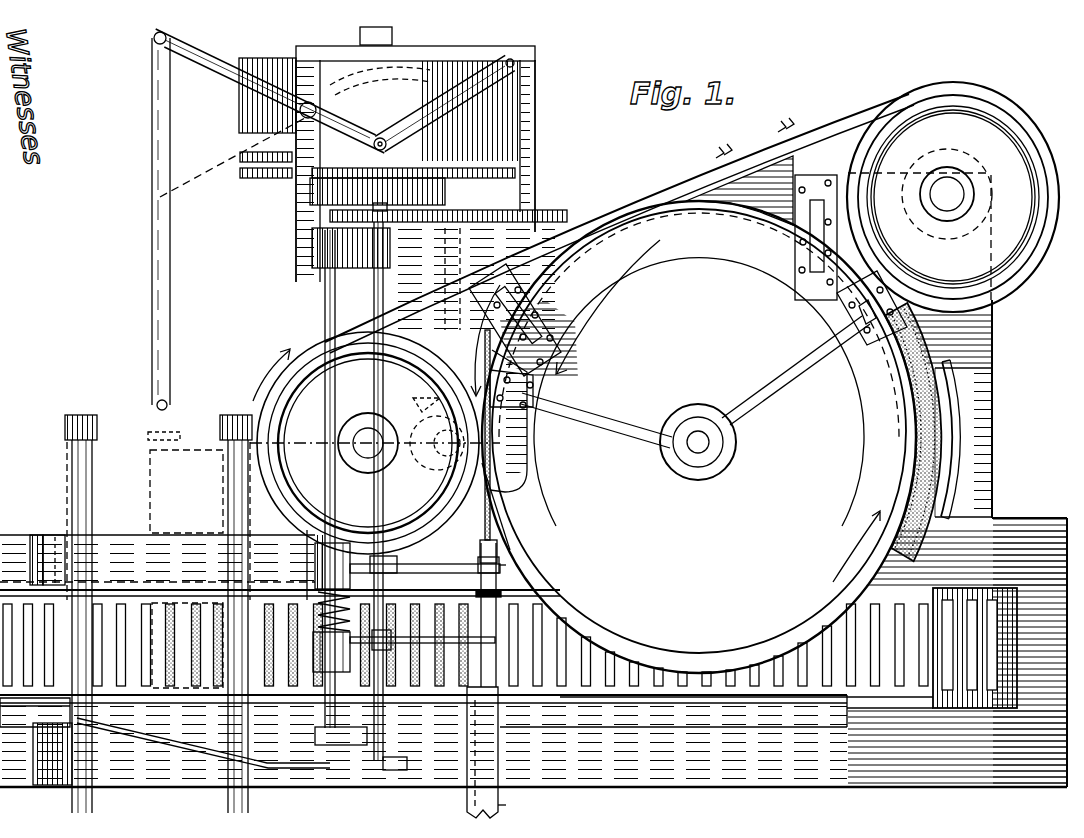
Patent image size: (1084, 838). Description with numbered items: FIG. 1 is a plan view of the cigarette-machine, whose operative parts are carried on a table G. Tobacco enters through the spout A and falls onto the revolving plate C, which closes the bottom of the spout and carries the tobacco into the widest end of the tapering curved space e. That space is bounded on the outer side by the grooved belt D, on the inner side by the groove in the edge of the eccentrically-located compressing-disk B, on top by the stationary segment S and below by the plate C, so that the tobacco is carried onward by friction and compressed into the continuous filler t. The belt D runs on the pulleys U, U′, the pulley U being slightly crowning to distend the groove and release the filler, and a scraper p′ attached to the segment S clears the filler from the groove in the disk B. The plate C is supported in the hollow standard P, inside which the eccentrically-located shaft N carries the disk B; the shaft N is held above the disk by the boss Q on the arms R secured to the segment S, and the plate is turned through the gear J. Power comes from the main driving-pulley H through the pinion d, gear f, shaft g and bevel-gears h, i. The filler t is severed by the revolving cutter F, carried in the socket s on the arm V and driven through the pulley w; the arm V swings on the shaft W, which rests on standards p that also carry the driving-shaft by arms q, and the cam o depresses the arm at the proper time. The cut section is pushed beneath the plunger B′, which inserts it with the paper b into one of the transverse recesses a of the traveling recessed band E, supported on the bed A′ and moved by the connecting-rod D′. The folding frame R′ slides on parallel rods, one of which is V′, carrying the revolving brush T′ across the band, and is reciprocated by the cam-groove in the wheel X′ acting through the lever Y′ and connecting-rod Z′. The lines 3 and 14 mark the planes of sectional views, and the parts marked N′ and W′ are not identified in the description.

The spout A is at (930, 385).
The bed A′ is at (660, 718).
The compressing-disk B is at (730, 312).
The plunger B′ is at (480, 690).
The revolving plate C is at (923, 468).
The grooved belt D is at (669, 195).
The connecting-rod D′ is at (203, 743).
The recessed belt E is at (788, 648).
The circular revolving cutter F is at (480, 553).
The table G is at (533, 480).
The main driving-pulley H is at (447, 192).
The gear J is at (422, 629).
The eccentrically-located shaft N is at (698, 436).
The bearing N′ is at (470, 746).
The hollow standard P is at (310, 256).
The boss Q is at (689, 454).
The arm R is at (806, 370).
The frame R′ is at (158, 521).
The stationary segment S is at (699, 431).
The revolving brush T′ is at (818, 172).
The pulley U is at (375, 443).
The pulley U′ is at (953, 197).
The arm V is at (425, 560).
The rod V′ is at (67, 490).
The shaft W is at (300, 300).
The post W′ is at (81, 604).
The wheel X′ is at (422, 103).
The lever Y′ is at (270, 113).
The connecting-rod Z′ is at (203, 270).
The transverse recesses a is at (779, 688).
The paper b is at (507, 808).
The pinion d is at (392, 262).
The tapering curved space e is at (739, 200).
The gear f is at (448, 243).
The shaft g is at (475, 277).
The bevel-gear h is at (426, 395).
The bevel-gear i is at (437, 443).
The cam o is at (372, 556).
The standards p is at (310, 641).
The scraper p′ is at (518, 480).
The arms q is at (377, 496).
The socket s is at (504, 571).
The filler t is at (483, 446).
The pulley w is at (476, 592).
The section line 3 is at (845, 441).
The section line 14 is at (752, 292).